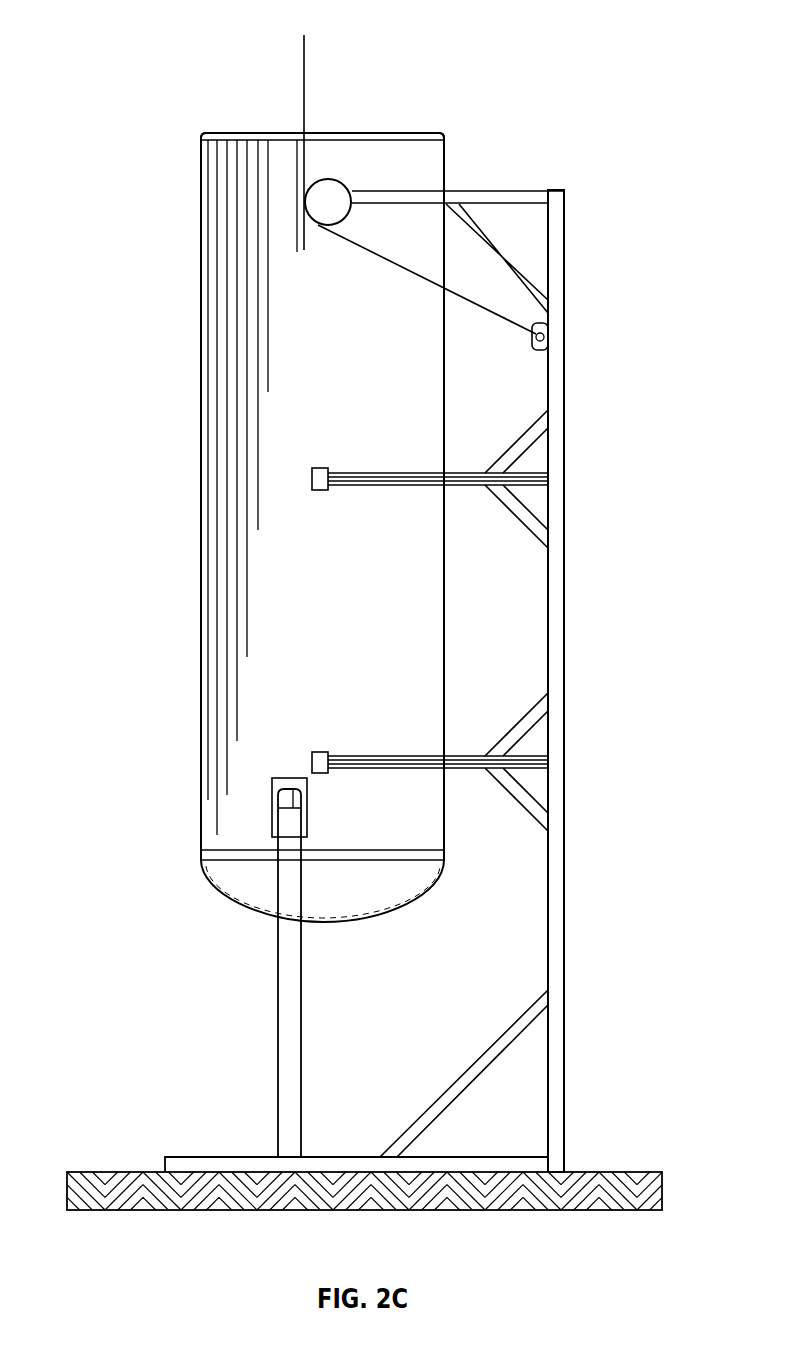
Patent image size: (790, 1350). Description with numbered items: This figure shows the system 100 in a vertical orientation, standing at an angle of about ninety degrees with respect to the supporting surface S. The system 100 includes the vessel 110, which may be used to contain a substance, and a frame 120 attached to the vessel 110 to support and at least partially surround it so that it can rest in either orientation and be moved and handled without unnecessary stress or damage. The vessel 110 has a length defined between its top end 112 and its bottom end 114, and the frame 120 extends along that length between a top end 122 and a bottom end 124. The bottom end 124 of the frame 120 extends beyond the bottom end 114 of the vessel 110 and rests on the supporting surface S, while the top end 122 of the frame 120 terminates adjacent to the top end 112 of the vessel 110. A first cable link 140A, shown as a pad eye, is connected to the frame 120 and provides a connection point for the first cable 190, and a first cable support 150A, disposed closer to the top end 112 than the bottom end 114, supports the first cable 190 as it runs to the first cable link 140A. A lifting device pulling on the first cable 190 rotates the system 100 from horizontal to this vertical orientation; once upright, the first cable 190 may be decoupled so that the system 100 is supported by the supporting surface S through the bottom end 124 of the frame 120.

The system 100 is at (397, 28).
The first cable 190 is at (304, 60).
The vessel 110 is at (284, 509).
The top end of the vessel 112 is at (231, 133).
The bottom end of the vessel 114 is at (201, 868).
The first cable support 150A is at (318, 222).
The top end of the frame 122 is at (451, 181).
The first cable link 140A is at (546, 330).
The frame 120 is at (396, 658).
The bottom end of the frame 124 is at (183, 1140).
The supporting surface S is at (88, 1210).